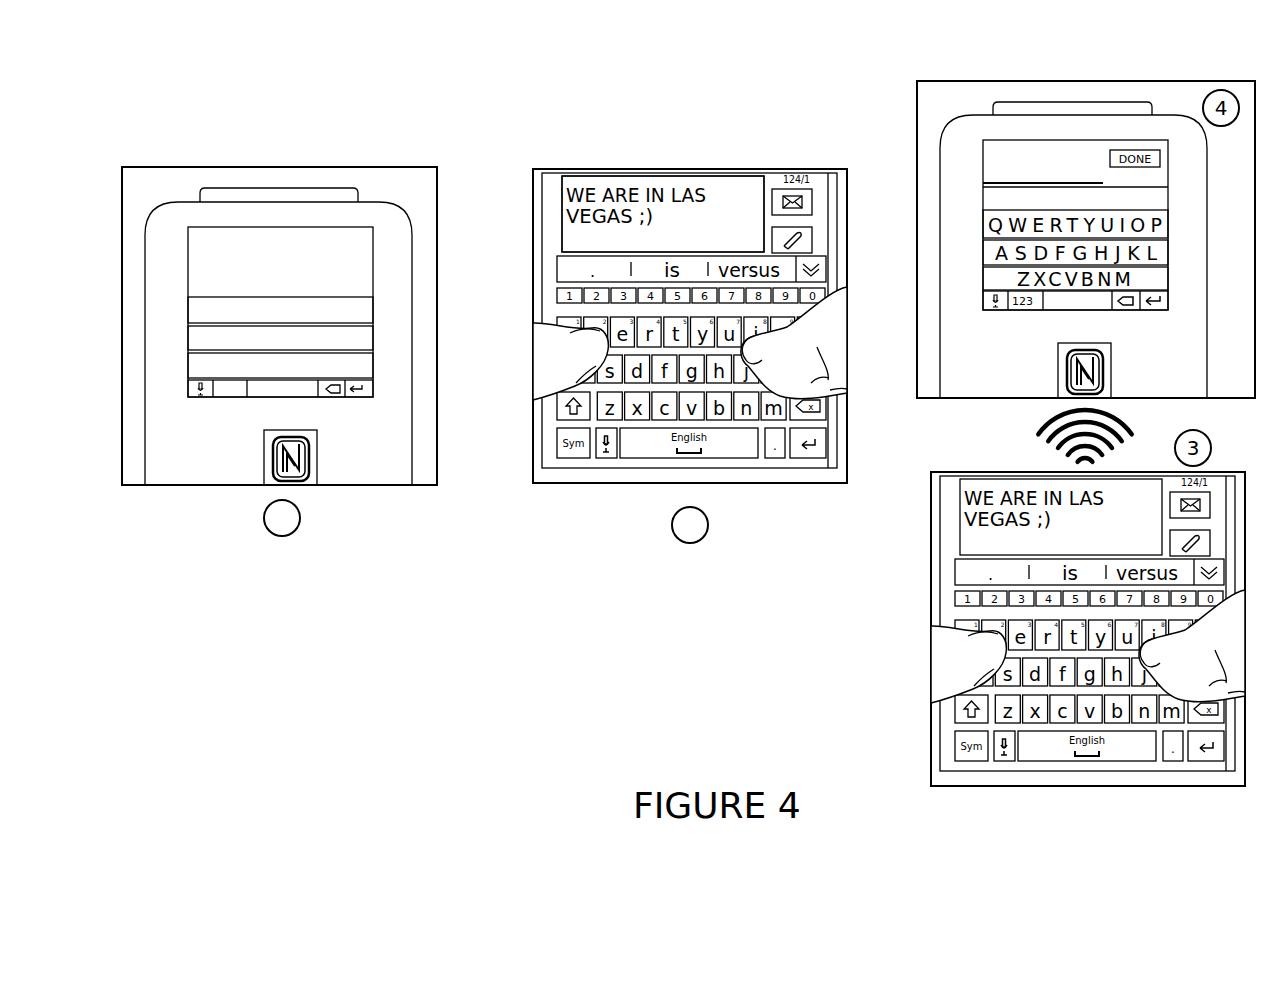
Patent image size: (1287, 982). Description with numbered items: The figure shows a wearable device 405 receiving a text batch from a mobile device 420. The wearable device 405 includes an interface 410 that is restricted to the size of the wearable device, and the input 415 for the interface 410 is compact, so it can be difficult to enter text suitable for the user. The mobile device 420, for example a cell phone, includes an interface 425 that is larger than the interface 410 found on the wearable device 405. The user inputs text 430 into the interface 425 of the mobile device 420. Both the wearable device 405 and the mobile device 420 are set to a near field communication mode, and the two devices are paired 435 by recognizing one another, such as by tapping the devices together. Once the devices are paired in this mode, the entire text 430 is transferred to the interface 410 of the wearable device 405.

The wearable device 405 is at (281, 190).
The interface 410 is at (374, 257).
The input 415 is at (373, 337).
The mobile device 420 is at (833, 205).
The interface 425 is at (560, 222).
The text 430 is at (665, 180).
The pairing 435 is at (1037, 428).